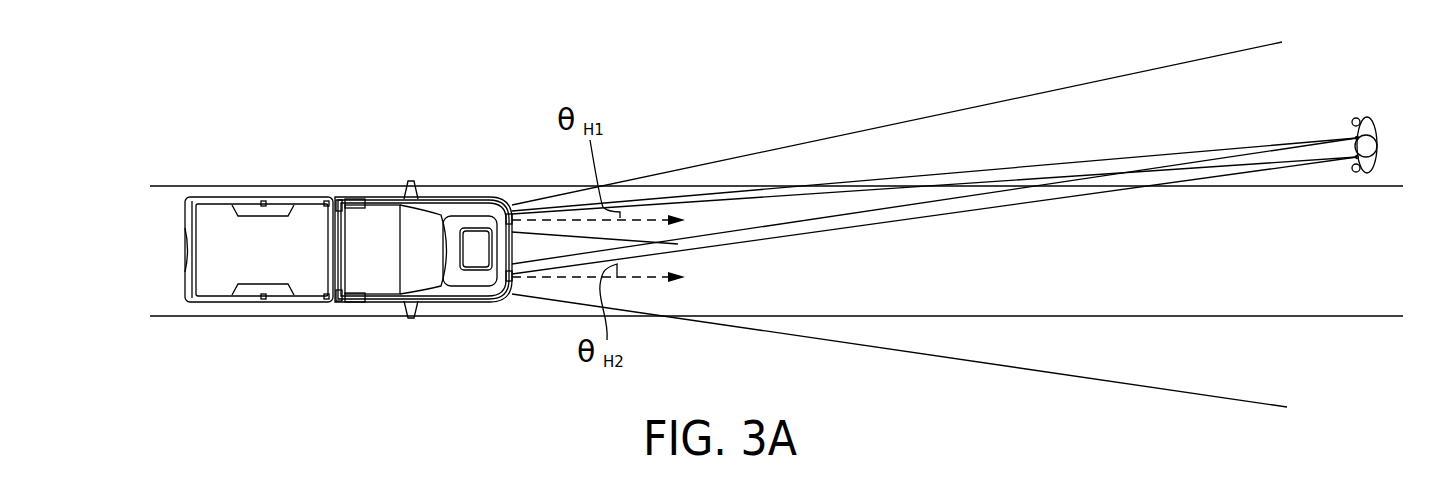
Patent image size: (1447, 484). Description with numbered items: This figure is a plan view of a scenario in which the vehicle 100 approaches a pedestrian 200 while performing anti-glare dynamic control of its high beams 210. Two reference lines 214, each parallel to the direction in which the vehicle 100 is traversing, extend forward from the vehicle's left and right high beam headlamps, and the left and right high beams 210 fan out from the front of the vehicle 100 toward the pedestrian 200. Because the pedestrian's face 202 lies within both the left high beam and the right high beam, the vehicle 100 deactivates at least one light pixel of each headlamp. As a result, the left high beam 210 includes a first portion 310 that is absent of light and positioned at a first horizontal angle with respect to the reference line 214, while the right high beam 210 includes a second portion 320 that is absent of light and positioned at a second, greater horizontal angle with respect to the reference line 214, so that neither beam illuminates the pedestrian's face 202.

The vehicle 100 is at (162, 245).
The pedestrian 200 is at (1392, 135).
The pedestrian's face 202 is at (1357, 138).
The high beams 210 is at (848, 205).
The reference line 214 is at (530, 220).
The first portion 310 is at (800, 190).
The second portion 320 is at (820, 223).